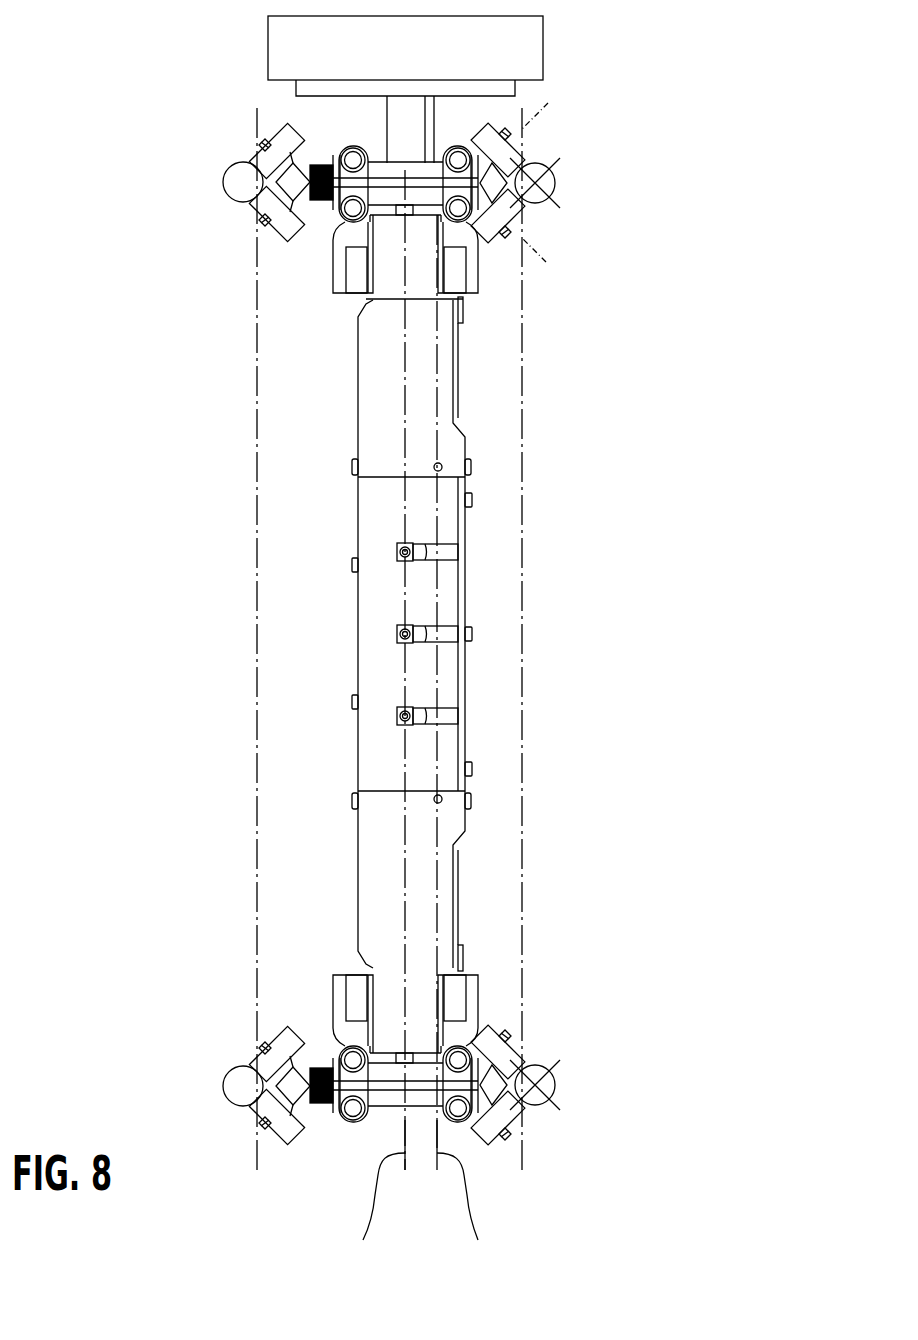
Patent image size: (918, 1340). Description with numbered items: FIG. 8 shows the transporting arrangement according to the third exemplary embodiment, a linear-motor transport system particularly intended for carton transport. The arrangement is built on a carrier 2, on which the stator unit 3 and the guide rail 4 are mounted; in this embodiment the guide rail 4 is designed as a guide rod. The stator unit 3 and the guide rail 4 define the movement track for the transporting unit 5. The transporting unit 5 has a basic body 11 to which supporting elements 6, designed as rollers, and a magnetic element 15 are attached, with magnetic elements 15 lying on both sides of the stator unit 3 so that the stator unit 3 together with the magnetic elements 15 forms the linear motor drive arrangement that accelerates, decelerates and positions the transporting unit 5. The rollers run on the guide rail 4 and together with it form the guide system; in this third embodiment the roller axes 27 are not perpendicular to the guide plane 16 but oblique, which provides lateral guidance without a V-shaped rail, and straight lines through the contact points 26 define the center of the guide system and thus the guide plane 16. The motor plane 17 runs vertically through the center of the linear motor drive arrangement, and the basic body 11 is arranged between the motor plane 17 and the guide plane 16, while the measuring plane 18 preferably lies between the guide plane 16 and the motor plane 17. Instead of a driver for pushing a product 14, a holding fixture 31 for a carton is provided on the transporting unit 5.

The carrier 2 is at (374, 627).
The stator unit 3 is at (388, 265).
The guide rail 4 is at (235, 180).
The transporting unit 5 is at (378, 167).
The supporting element 6 is at (264, 156).
The basic body 11 is at (462, 238).
The product 14 is at (303, 45).
The magnetic element 15 is at (372, 300).
The guide plane 16 is at (257, 908).
The motor plane 17 is at (378, 1214).
The measuring plane 18 is at (465, 1214).
The contact point 26 is at (547, 163).
The roller axis 27 is at (538, 117).
The holding fixture 31 is at (303, 89).